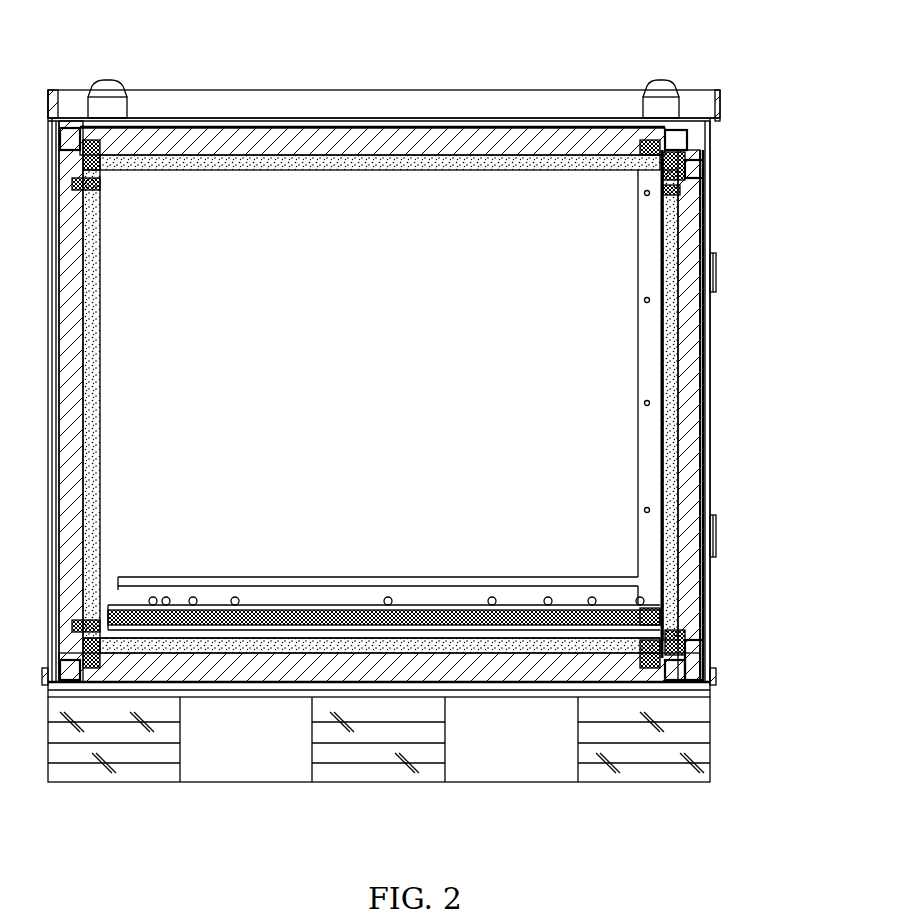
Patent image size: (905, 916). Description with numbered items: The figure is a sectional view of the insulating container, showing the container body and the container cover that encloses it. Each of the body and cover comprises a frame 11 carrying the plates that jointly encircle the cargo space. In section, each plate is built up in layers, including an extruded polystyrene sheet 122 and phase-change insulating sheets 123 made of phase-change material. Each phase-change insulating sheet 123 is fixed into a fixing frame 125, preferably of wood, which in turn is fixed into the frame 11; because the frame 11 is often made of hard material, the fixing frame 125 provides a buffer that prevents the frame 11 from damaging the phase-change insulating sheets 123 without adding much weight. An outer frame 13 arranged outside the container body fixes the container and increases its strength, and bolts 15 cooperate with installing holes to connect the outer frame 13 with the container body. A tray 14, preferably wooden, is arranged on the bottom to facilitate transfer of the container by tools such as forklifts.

The frame 11 is at (688, 640).
The outer frame 13 is at (353, 98).
The tray 14 is at (685, 738).
The bolts 15 is at (662, 85).
The extruded polystyrene sheet 122 is at (708, 237).
The phase-change insulating sheets 123 is at (710, 365).
The fixing frame 125 is at (710, 170).